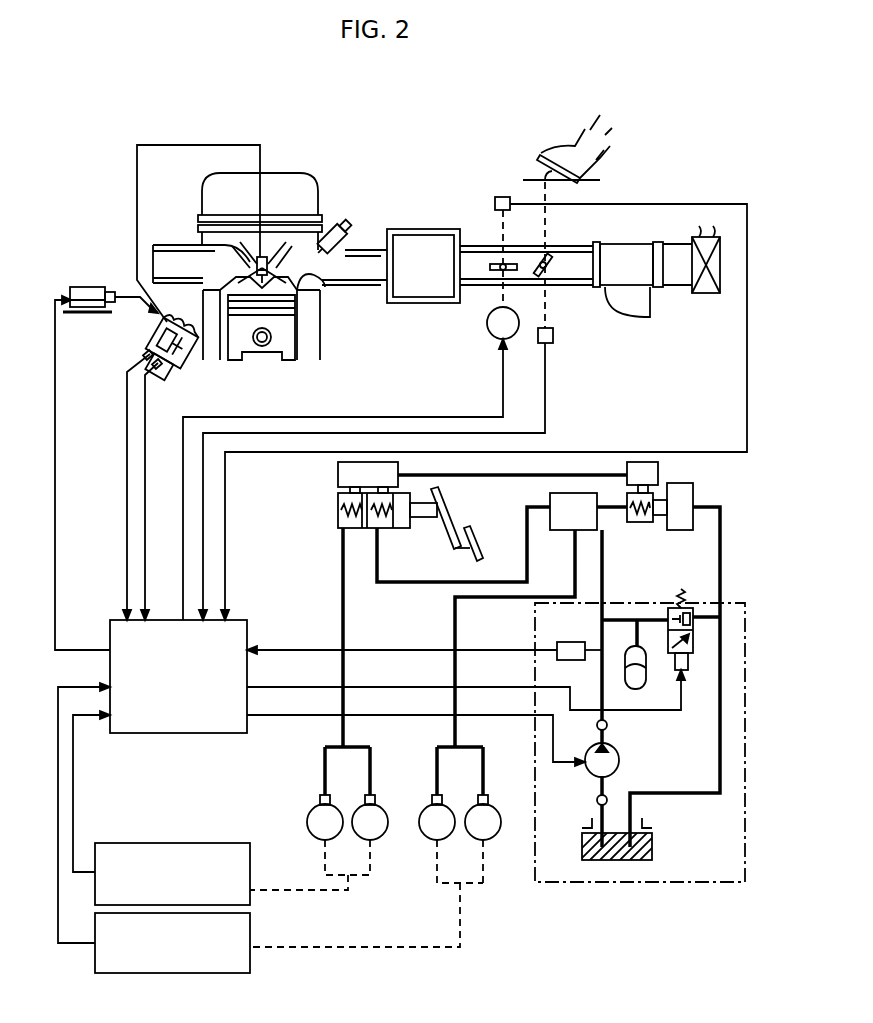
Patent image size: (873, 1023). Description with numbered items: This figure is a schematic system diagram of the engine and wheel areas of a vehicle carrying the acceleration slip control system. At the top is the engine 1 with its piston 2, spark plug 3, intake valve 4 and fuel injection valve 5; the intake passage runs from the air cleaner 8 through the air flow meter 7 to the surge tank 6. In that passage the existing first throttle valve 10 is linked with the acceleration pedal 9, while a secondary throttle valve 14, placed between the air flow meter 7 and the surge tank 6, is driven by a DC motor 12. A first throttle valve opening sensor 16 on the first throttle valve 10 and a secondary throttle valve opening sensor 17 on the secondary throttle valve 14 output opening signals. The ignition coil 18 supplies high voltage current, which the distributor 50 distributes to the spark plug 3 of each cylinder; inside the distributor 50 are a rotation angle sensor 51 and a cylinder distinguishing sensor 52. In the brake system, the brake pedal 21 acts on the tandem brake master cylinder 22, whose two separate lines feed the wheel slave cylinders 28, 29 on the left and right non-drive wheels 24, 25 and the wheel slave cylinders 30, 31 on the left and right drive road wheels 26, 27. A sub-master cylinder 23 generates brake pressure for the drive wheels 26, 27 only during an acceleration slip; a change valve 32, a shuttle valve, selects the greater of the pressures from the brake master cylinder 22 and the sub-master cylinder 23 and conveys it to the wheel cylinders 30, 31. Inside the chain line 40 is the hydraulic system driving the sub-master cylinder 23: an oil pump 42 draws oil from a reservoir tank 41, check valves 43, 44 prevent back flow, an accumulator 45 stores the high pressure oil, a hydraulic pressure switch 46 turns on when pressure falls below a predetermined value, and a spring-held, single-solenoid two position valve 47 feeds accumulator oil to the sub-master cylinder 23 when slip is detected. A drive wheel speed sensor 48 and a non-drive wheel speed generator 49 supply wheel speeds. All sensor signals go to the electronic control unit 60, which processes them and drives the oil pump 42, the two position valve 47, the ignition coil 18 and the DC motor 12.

The engine 1 is at (283, 164).
The piston 2 is at (288, 357).
The spark plug 3 is at (266, 258).
The intake valve 4 is at (320, 286).
The fuel injection valve 5 is at (352, 223).
The surge tank 6 is at (420, 304).
The air flow meter 7 is at (628, 312).
The air cleaner 8 is at (692, 298).
The acceleration pedal 9 is at (540, 170).
The first throttle valve 10 is at (550, 274).
The DC motor 12 is at (491, 334).
The secondary throttle valve 14 is at (497, 262).
The first throttle valve opening sensor 16 is at (553, 340).
The secondary throttle valve opening sensor 17 is at (495, 200).
The ignition coil 18 is at (86, 287).
The brake pedal 21 is at (460, 522).
The brake master cylinder 22 is at (338, 506).
The sub-master cylinder 23 is at (698, 492).
The left non-drive wheel 24 is at (336, 838).
The right non-drive wheel 25 is at (381, 838).
The left drive road wheel 26 is at (427, 838).
The right drive road wheel 27 is at (493, 838).
The wheel slave cylinder 28 is at (320, 796).
The wheel slave cylinder 29 is at (366, 796).
The wheel slave cylinder 30 is at (432, 797).
The wheel slave cylinder 31 is at (478, 797).
The change valve 32 is at (590, 531).
The chain line 40 is at (657, 884).
The reservoir tank 41 is at (654, 847).
The oil pump 42 is at (620, 759).
The check valve 43 is at (608, 725).
The check valve 44 is at (608, 801).
The accumulator 45 is at (627, 677).
The hydraulic pressure switch 46 is at (571, 642).
The two position valve 47 is at (672, 606).
The drive wheel speed sensor 48 is at (251, 936).
The non-drive wheel speed generator 49 is at (251, 864).
The distributor 50 is at (150, 335).
The rotation angle sensor 51 is at (142, 358).
The cylinder distinguishing sensor 52 is at (152, 370).
The electronic control unit 60 is at (248, 622).